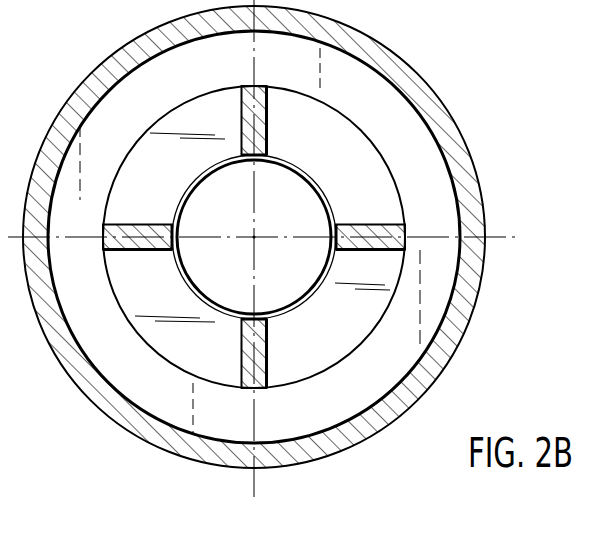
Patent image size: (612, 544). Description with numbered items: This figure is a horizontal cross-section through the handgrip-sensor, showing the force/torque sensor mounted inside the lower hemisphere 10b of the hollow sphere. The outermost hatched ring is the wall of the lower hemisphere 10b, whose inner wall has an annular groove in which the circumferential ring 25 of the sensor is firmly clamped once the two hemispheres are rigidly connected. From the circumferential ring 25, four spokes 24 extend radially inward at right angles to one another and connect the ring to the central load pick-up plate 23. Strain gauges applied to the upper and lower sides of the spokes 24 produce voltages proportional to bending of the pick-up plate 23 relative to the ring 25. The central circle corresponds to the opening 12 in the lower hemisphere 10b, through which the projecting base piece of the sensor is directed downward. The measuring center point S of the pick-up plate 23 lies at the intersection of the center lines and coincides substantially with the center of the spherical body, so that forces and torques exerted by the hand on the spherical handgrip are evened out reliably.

The lower hemisphere 10b is at (457, 178).
The circumferential ring 25 is at (390, 107).
The spokes 24 is at (362, 227).
The load pick-up plate 23 is at (197, 263).
The opening 12 is at (315, 292).
The measuring center point S is at (256, 236).